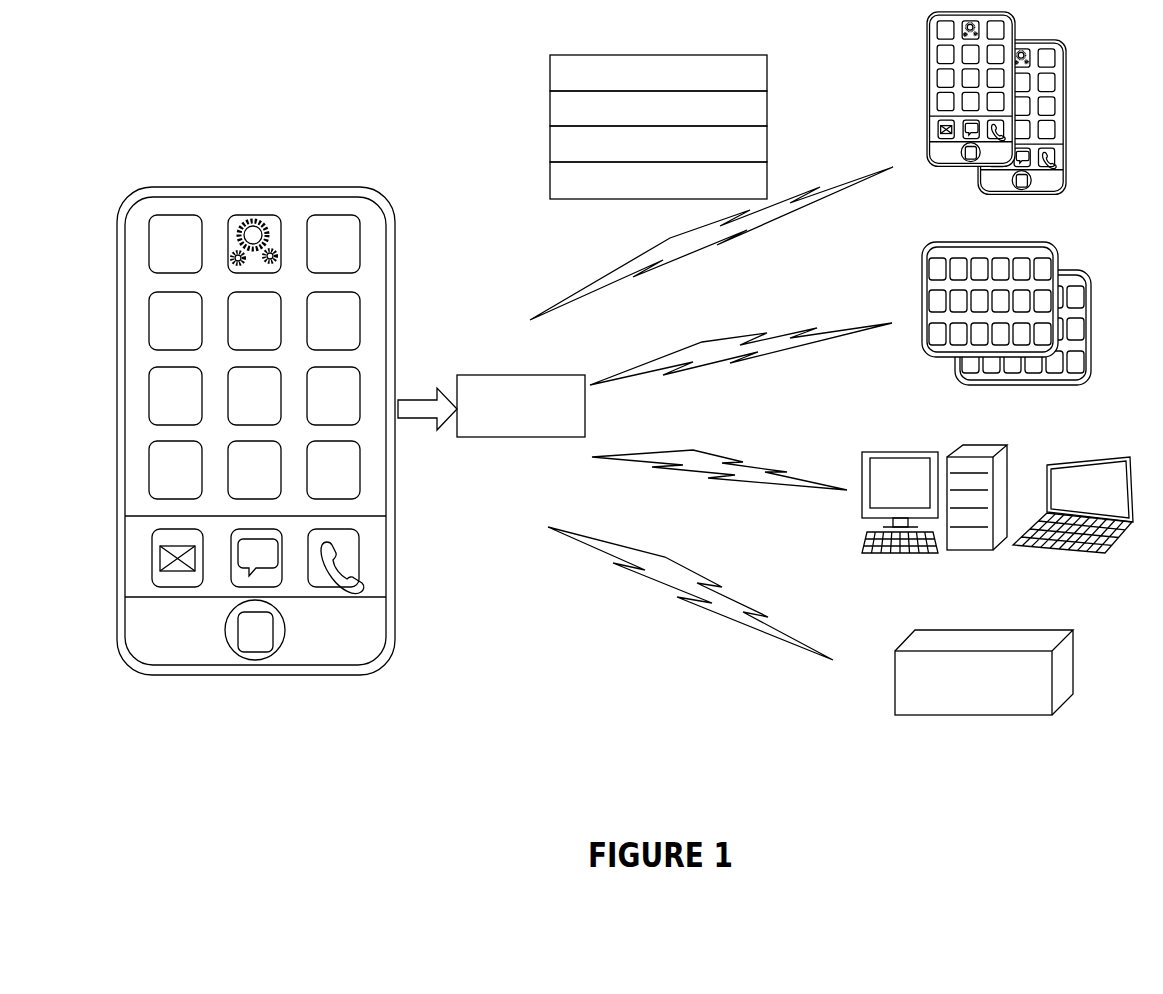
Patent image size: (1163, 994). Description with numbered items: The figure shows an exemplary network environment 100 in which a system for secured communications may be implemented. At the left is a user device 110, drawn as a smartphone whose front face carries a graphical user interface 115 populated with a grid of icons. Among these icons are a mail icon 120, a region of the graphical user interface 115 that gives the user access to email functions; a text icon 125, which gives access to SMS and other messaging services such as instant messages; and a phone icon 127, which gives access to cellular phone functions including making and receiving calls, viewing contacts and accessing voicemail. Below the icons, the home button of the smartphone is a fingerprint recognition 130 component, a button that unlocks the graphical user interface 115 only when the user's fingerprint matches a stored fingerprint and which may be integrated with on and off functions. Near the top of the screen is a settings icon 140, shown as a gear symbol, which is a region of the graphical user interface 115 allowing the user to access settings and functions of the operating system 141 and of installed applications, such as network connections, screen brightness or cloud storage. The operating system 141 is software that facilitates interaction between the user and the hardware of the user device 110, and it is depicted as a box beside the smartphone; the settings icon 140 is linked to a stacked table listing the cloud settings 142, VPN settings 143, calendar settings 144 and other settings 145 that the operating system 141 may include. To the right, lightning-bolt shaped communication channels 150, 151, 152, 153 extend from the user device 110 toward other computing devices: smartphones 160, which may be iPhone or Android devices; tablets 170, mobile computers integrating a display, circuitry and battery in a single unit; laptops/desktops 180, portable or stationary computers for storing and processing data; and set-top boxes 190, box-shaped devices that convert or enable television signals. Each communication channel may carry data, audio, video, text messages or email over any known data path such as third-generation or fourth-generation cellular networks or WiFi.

The network environment 100 is at (280, 88).
The user device 110 is at (171, 181).
The graphical user interface 115 is at (388, 458).
The mail icon 120 is at (171, 589).
The text icon 125 is at (283, 590).
The phone icon 127 is at (368, 557).
The fingerprint recognition 130 is at (236, 655).
The settings icon 140 is at (550, 56).
The operating system 141 is at (491, 406).
The cloud settings 142 is at (658, 73).
The VPN settings 143 is at (658, 108).
The calendar settings 144 is at (658, 144).
The other settings 145 is at (658, 180).
The communication channel 150 is at (711, 243).
The communication channel 151 is at (741, 358).
The communication channel 152 is at (719, 479).
The communication channel 153 is at (690, 593).
The smartphones 160 is at (995, 119).
The tablets 170 is at (1006, 331).
The laptops/desktops 180 is at (997, 524).
The set-top boxes 190 is at (984, 672).